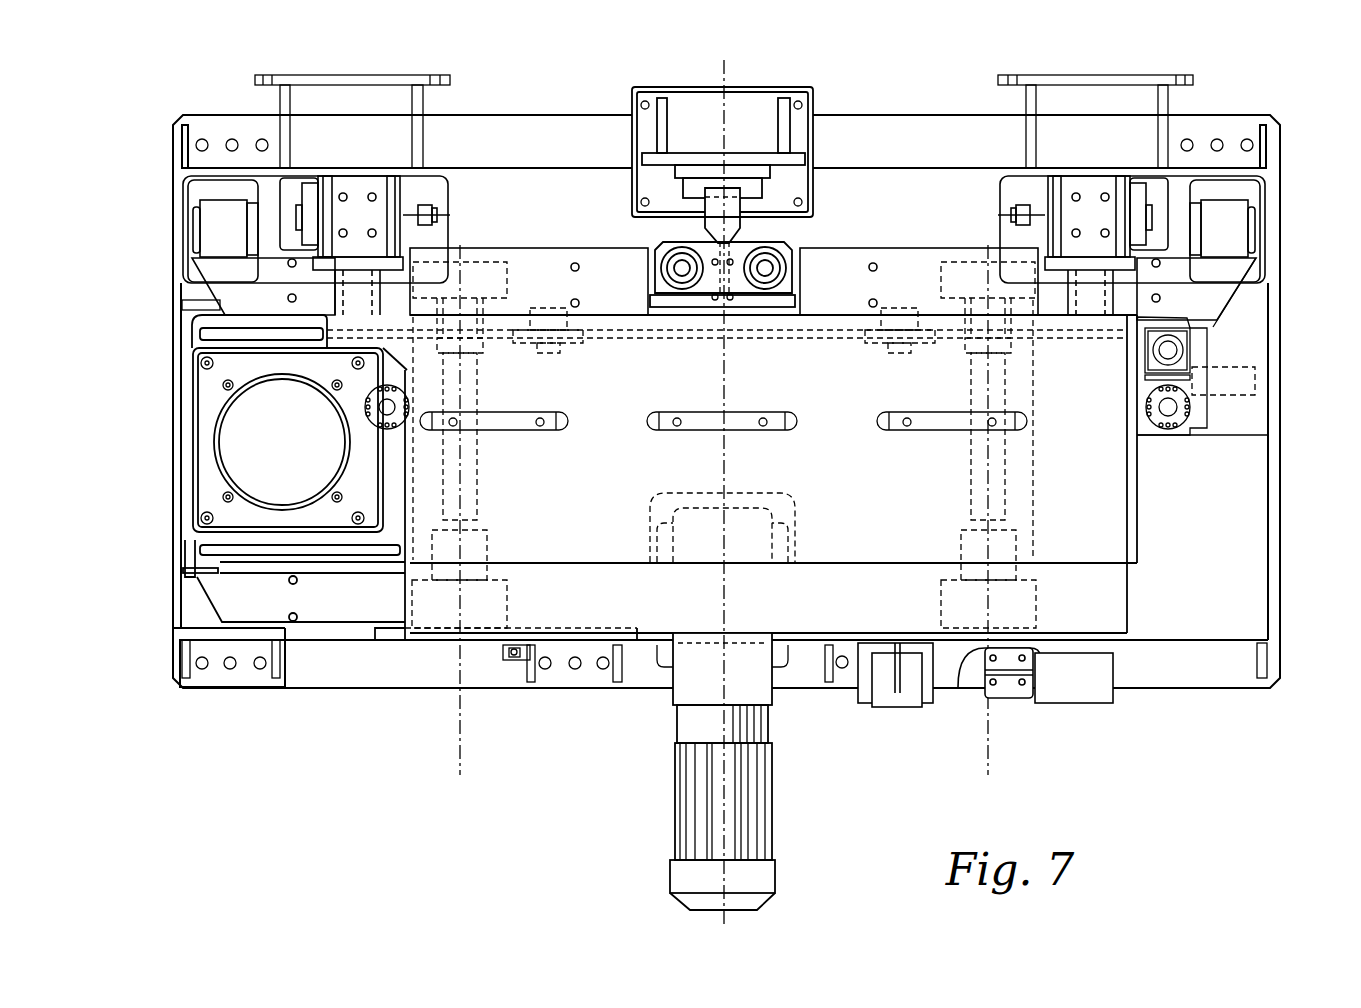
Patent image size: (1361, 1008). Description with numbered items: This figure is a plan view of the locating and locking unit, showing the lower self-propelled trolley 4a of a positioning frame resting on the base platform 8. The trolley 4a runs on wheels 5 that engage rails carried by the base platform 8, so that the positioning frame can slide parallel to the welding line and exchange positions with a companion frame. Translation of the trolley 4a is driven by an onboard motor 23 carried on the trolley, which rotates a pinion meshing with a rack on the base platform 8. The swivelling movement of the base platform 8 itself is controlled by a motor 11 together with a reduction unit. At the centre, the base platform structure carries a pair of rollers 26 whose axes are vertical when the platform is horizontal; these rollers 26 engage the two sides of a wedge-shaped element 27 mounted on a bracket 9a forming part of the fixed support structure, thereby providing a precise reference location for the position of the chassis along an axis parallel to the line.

The self-propelled trolley 4a is at (1142, 495).
The wheels 5 is at (927, 197).
The base platform 8 is at (1255, 607).
The bracket 9a is at (685, 110).
The motor 11 is at (745, 807).
The onboard motor 23 is at (245, 447).
The rollers 26 is at (665, 252).
The wedge-shaped element 27 is at (730, 207).